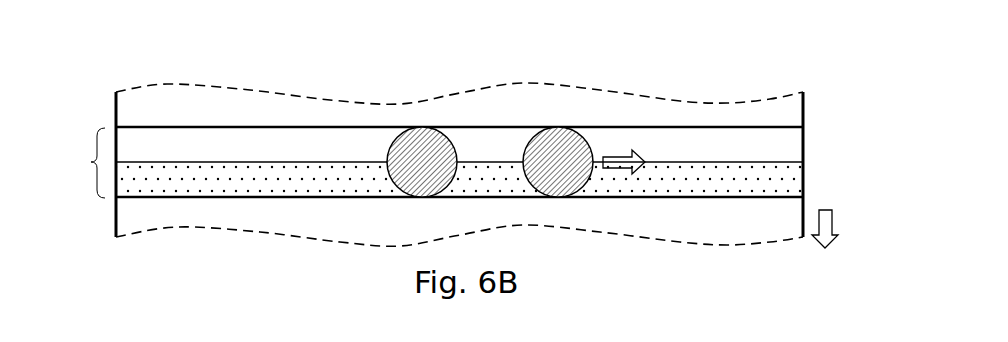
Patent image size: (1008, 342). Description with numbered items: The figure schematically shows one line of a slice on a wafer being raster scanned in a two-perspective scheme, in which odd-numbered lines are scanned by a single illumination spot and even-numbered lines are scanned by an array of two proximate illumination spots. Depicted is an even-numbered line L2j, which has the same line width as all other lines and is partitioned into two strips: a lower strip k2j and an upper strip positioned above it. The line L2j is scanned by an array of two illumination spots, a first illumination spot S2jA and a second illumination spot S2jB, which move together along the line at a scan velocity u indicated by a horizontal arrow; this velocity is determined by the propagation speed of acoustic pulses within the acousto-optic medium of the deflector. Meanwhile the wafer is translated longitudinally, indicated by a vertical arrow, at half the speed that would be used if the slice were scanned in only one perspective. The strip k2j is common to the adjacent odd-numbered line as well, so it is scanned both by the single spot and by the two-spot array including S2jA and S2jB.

The first illumination spot S2jA is at (420, 127).
The second illumination spot S2jB is at (555, 127).
The line L2j is at (91, 161).
The strip k2j is at (488, 181).
The scan velocity u is at (622, 172).